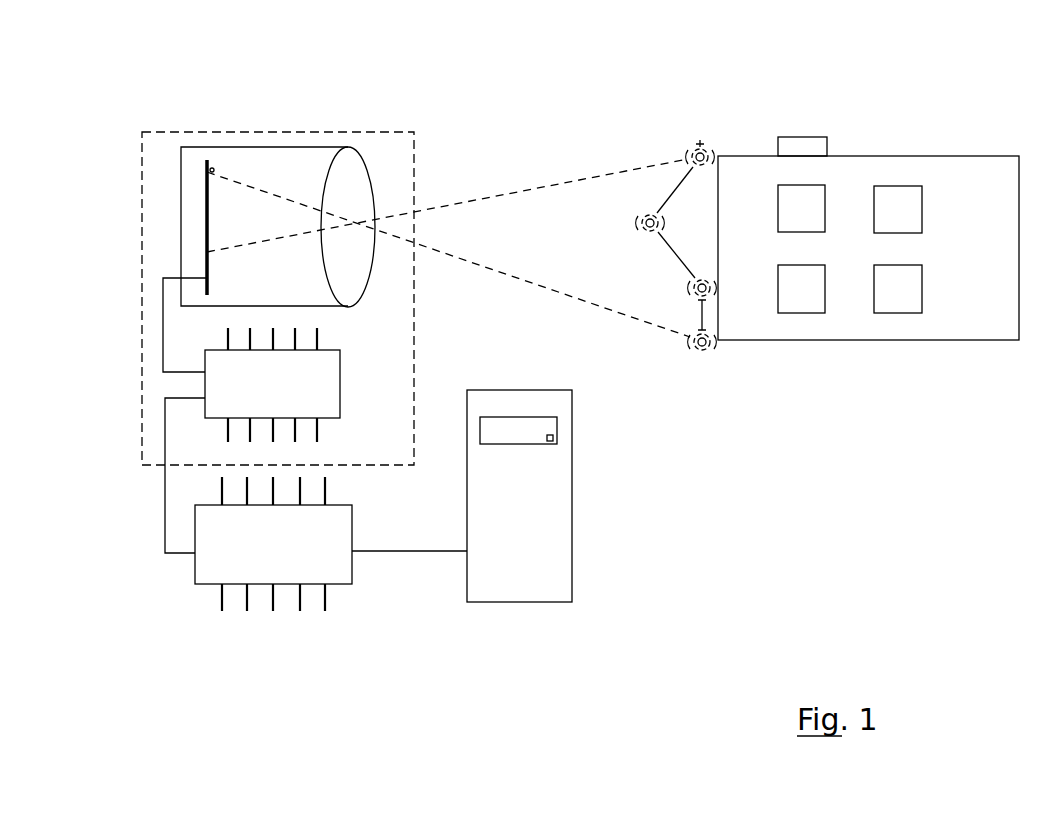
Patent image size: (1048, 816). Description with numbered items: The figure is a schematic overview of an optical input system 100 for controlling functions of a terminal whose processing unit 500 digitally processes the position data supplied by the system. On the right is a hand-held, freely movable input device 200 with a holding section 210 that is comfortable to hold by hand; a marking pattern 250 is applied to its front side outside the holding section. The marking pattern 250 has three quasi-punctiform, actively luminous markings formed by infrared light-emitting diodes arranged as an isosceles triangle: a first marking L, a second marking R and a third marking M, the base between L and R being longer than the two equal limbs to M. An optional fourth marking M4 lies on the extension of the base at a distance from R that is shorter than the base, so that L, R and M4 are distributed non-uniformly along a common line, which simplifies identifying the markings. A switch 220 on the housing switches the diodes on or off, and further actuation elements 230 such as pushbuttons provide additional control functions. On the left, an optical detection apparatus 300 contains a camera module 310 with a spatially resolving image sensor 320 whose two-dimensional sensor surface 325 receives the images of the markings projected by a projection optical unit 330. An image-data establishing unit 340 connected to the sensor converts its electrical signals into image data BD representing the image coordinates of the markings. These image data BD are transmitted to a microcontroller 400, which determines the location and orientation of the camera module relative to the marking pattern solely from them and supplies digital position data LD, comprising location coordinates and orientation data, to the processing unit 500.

The input system 100 is at (602, 77).
The input device 200 is at (871, 216).
The holding section 210 is at (963, 337).
The switch 220 is at (818, 138).
The actuation elements 230 is at (892, 302).
The marking pattern 250 is at (688, 253).
The optical detection apparatus 300 is at (297, 56).
The camera module 310 is at (366, 205).
The image sensor 320 is at (207, 220).
The sensor surface 325 is at (214, 170).
The projection optical unit 330 is at (357, 173).
The image-data establishing unit 340 is at (215, 383).
The microcontroller 400 is at (203, 563).
The processing unit 500 is at (562, 560).
The first marking L is at (698, 143).
The third marking M is at (640, 227).
The second marking R is at (688, 287).
The fourth marking M4 is at (697, 355).
The image data BD is at (157, 480).
The position data LD is at (430, 562).